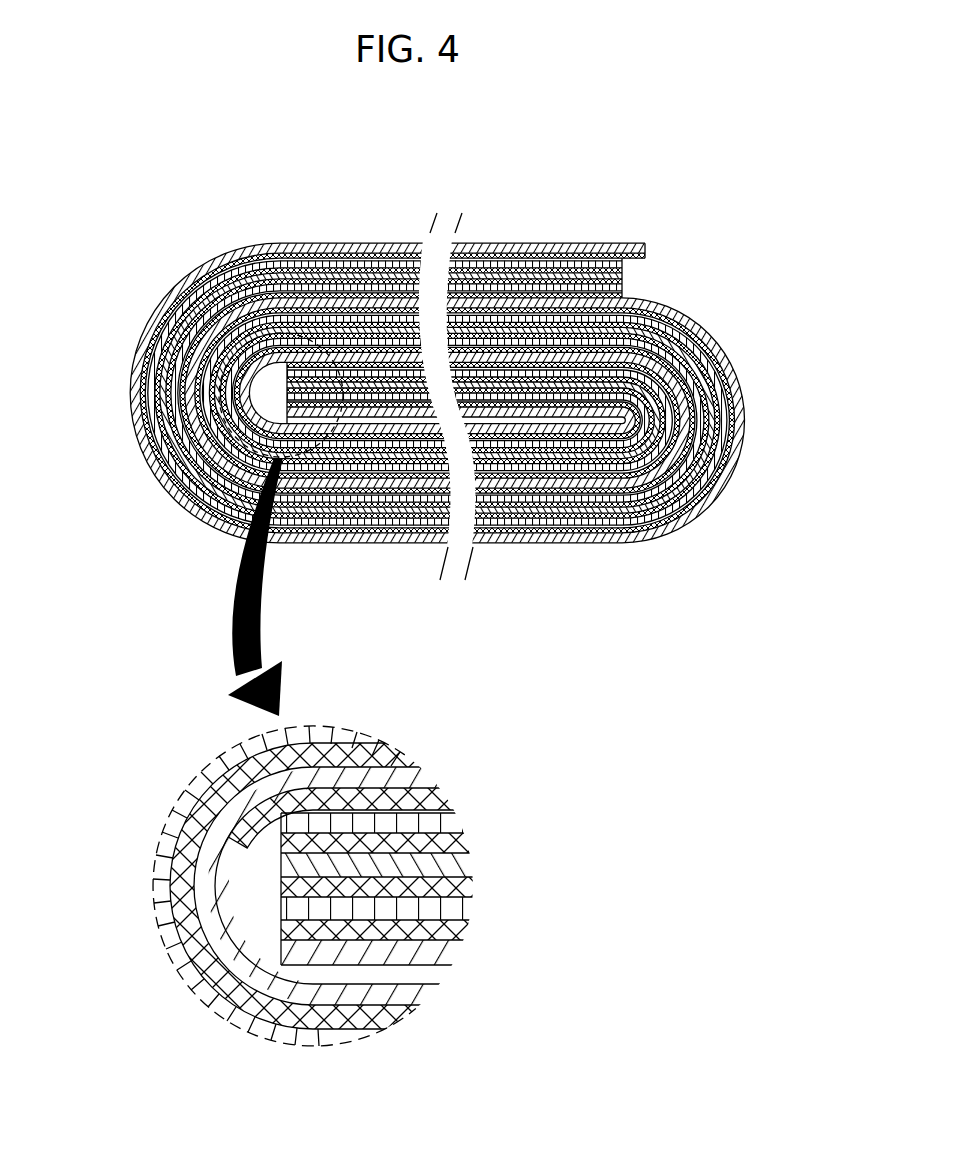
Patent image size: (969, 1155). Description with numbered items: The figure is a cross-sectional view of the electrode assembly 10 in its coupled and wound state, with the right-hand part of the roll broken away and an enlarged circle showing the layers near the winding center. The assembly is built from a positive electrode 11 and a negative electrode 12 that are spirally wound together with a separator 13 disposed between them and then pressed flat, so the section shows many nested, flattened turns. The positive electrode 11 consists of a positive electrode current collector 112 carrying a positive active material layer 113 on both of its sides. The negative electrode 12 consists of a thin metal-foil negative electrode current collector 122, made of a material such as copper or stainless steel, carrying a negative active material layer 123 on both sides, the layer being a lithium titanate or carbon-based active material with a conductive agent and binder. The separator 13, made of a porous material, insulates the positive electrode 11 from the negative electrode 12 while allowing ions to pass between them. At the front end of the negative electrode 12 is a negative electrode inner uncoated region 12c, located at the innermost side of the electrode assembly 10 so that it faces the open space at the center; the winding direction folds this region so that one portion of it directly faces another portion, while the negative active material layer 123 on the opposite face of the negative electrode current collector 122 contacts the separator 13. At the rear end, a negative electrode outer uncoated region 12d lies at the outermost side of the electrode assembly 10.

The electrode assembly 10 is at (545, 234).
The positive electrode 11 is at (572, 800).
The positive electrode current collector 112 is at (573, 510).
The positive active material layer 113 is at (523, 508).
The negative electrode 12 is at (535, 695).
The negative electrode current collector 122 is at (710, 500).
The negative active material layer 123 is at (700, 512).
The negative electrode inner uncoated region 12c is at (288, 421).
The negative electrode outer uncoated region 12d is at (634, 246).
The separator 13 is at (637, 497).